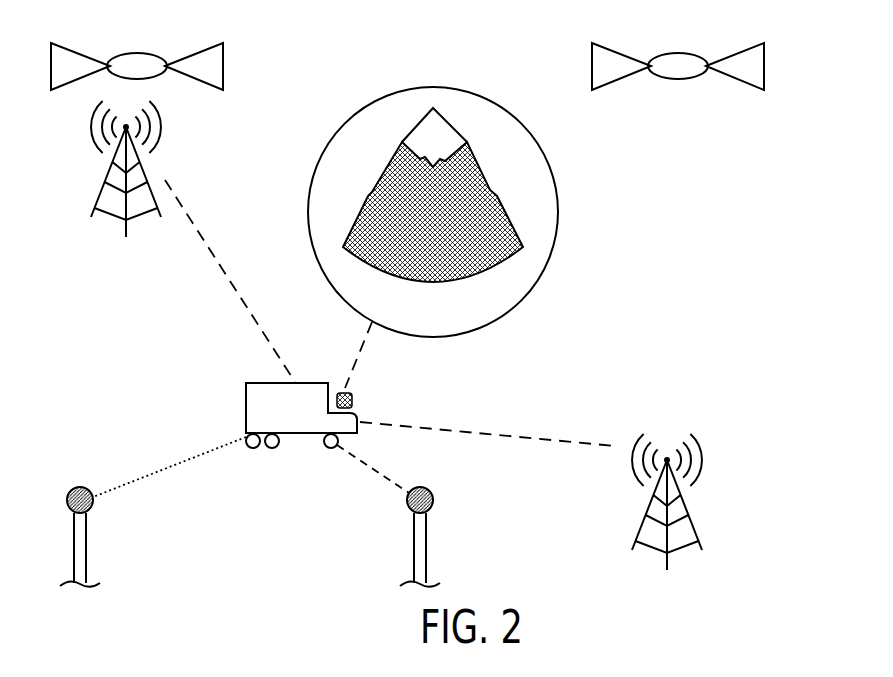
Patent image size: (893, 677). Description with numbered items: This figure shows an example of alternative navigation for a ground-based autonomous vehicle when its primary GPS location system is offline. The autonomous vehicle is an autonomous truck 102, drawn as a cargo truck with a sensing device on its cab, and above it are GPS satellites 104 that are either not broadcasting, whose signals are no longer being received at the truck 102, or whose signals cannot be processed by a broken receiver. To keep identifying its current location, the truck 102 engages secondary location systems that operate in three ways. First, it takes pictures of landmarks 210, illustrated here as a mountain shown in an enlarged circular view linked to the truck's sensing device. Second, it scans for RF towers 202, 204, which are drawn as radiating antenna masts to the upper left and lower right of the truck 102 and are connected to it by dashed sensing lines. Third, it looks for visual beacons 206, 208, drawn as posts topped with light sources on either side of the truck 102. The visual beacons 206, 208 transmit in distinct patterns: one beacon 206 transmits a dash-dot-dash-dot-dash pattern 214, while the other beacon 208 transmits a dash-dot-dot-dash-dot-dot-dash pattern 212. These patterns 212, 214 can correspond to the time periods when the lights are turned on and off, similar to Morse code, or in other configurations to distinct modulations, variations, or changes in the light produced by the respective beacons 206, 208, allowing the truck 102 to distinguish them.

The autonomous truck 102 is at (246, 398).
The GPS satellites 104 is at (223, 60).
The RF tower 202 is at (145, 173).
The RF tower 204 is at (687, 505).
The visual beacon 206 is at (427, 547).
The visual beacon 208 is at (86, 547).
The landmark 210 is at (559, 200).
The beacon transmission pattern 212 is at (158, 472).
The beacon transmission pattern 214 is at (355, 458).